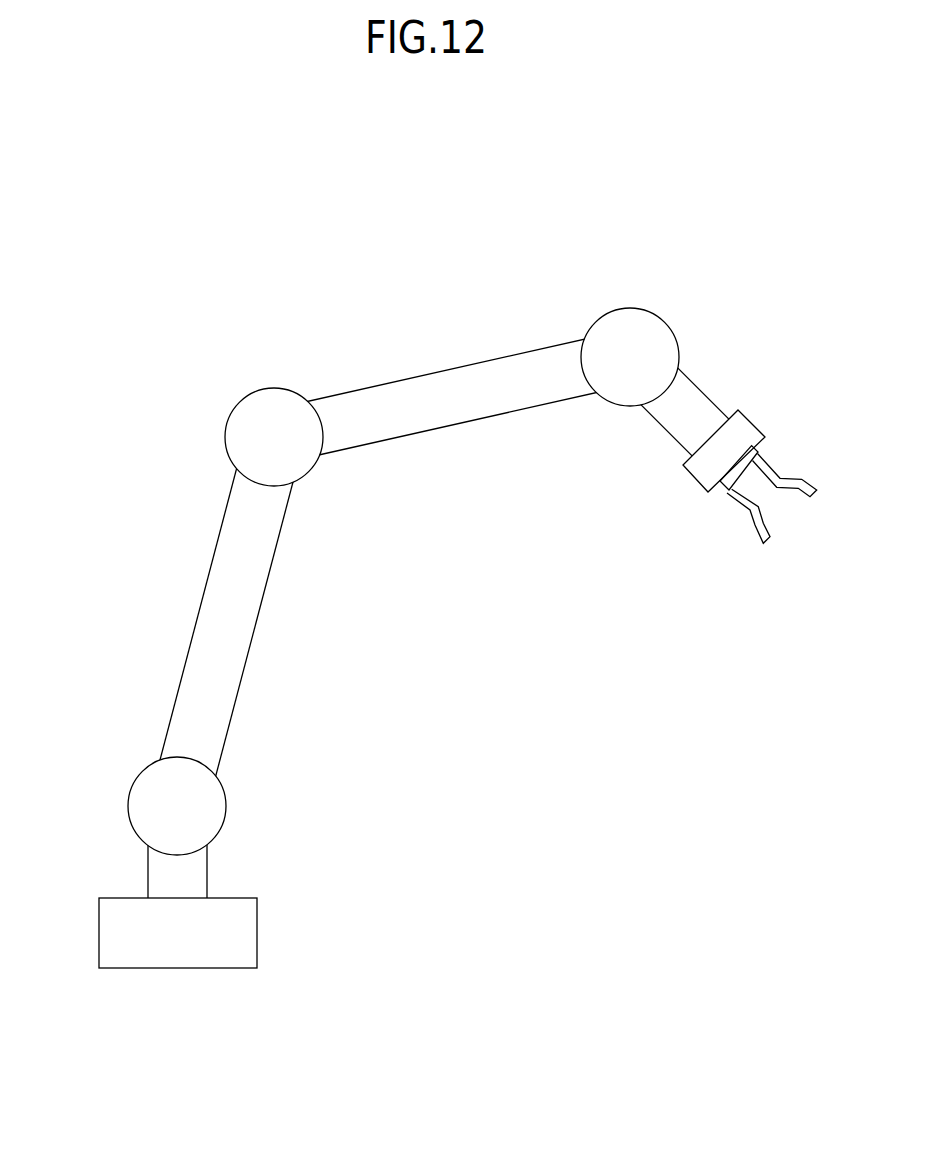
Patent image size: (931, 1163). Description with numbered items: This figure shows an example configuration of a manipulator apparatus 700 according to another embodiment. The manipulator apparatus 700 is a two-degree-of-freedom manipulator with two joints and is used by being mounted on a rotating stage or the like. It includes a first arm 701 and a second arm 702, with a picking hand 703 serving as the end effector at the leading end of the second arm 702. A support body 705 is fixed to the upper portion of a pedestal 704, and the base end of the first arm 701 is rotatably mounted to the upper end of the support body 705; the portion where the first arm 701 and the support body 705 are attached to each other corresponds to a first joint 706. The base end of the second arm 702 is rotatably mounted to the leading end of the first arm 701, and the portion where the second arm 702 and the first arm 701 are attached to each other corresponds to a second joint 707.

The manipulator apparatus 700 is at (339, 281).
The first arm 701 is at (210, 563).
The second arm 702 is at (410, 377).
The picking hand 703 is at (752, 416).
The pedestal 704 is at (257, 928).
The support body 705 is at (208, 873).
The first joint 706 is at (119, 772).
The second joint 707 is at (327, 495).